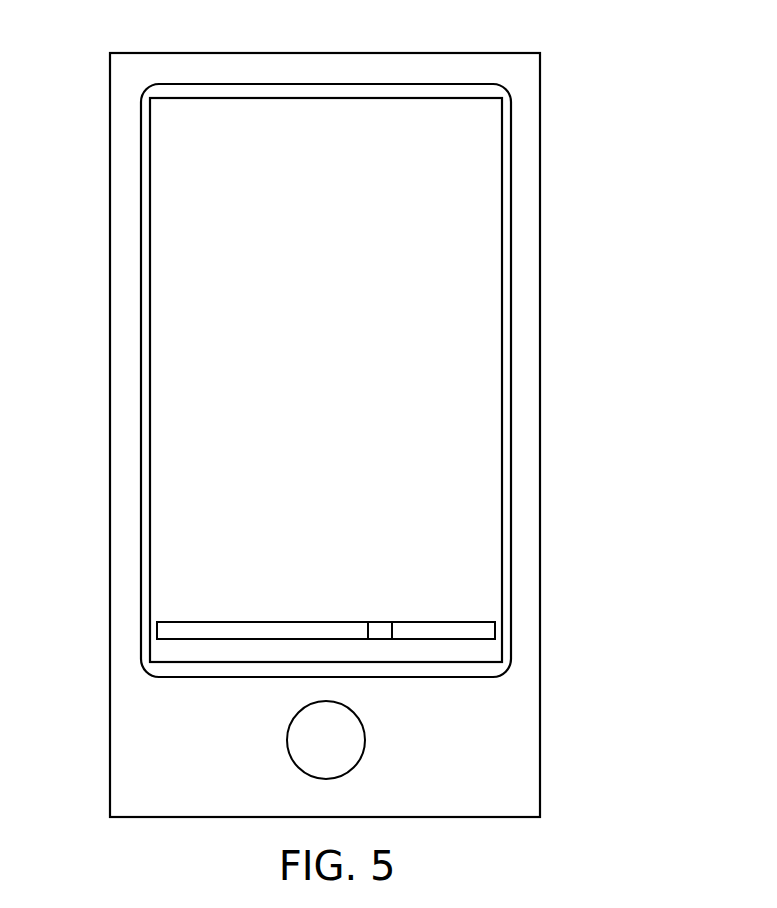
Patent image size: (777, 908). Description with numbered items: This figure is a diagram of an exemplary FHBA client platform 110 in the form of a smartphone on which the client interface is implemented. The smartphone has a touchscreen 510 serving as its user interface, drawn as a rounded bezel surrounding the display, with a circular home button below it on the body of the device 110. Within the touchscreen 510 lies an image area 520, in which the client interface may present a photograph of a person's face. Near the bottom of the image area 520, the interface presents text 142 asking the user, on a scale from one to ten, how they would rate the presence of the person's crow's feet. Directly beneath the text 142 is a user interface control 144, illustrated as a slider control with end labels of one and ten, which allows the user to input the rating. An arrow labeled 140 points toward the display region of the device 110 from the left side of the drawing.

The FHBA client platform 110 is at (470, 56).
The display 140 is at (126, 364).
The text 142 is at (399, 559).
The user interface control 144 is at (188, 632).
The touchscreen 510 is at (511, 185).
The image area 520 is at (503, 260).